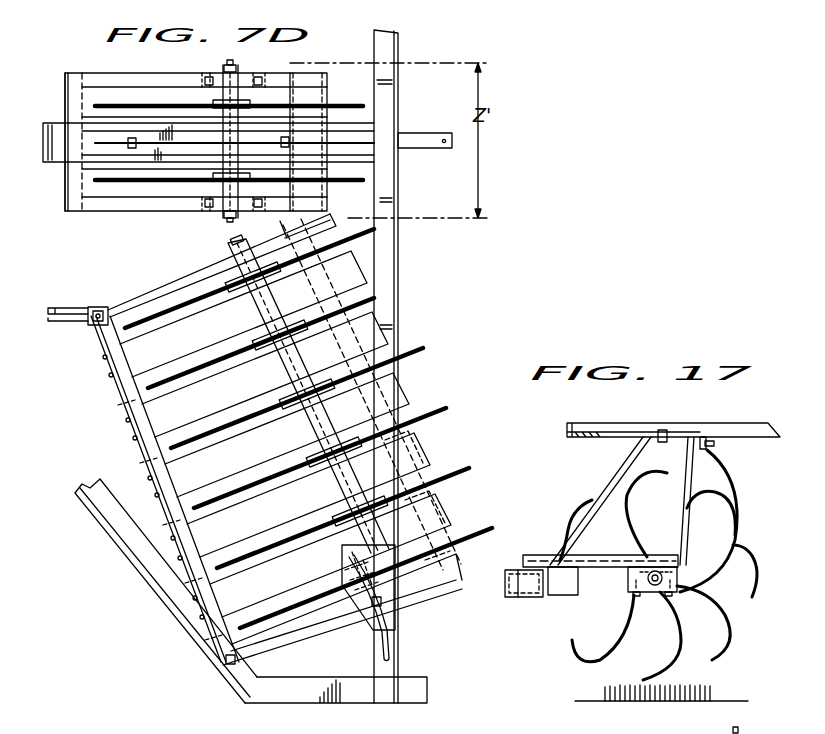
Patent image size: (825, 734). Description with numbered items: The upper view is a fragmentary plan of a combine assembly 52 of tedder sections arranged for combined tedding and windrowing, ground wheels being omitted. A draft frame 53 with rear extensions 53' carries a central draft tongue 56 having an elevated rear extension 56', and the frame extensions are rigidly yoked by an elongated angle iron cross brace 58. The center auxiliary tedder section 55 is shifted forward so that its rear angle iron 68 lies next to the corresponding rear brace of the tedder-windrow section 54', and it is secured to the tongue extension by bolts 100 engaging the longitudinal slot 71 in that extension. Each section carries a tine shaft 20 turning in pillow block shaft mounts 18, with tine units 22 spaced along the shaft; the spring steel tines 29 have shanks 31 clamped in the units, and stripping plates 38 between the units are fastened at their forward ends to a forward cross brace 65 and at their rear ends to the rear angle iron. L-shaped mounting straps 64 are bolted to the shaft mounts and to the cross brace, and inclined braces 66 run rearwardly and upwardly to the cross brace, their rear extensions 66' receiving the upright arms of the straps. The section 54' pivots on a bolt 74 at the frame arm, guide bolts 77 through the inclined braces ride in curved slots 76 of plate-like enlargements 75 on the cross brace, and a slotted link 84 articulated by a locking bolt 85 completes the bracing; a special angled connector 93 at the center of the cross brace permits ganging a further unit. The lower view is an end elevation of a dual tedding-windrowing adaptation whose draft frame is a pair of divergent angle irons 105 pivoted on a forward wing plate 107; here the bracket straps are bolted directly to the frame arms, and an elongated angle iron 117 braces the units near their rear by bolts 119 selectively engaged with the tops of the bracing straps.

In FIG. 7D, the shaft mount 18 is at (200, 81).
In FIG. 17, the shaft mount 18 is at (632, 574).
In FIG. 7D, the tine shaft 20 is at (234, 219).
In FIG. 17, the tine shaft 20 is at (655, 592).
In FIG. 7D, the tine unit 22 is at (262, 96).
In FIG. 7D, the tine 29 is at (113, 103).
In FIG. 17, the tine 29 is at (681, 631).
In FIG. 7D, the shank 31 is at (193, 182).
In FIG. 7D, the stripping plate 38 is at (343, 278).
In FIG. 7D, the combine assembly 52 is at (475, 235).
In FIG. 7D, the draft frame 53 is at (166, 591).
In FIG. 7D, the rear extension 53' is at (336, 705).
In FIG. 7D, the tedder-windrow section 54' is at (145, 497).
In FIG. 17, the tedder-windrow section 54' is at (730, 523).
In FIG. 7D, the auxiliary tedder section 55 is at (62, 203).
In FIG. 7D, the draft tongue 56 is at (216, 191).
In FIG. 7D, the rear extension 56' is at (196, 126).
In FIG. 7D, the cross brace 58 is at (396, 282).
In FIG. 17, the mounting strap iron 64 is at (688, 492).
In FIG. 7D, the cross brace 65 is at (70, 177).
In FIG. 7D, the brace 66 is at (285, 442).
In FIG. 17, the brace 66 is at (600, 501).
In FIG. 17, the rear extension 66' is at (702, 479).
In FIG. 7D, the rear angle iron 68 is at (285, 192).
In FIG. 17, the rear angle iron 68 is at (714, 437).
In FIG. 7D, the slot 71 is at (187, 145).
In FIG. 7D, the bolt 74 is at (225, 664).
In FIG. 7D, the enlargement 75 is at (343, 555).
In FIG. 7D, the slot 76 is at (390, 656).
In FIG. 7D, the guide bolt 77 is at (382, 602).
In FIG. 7D, the slotted link 84 is at (78, 322).
In FIG. 7D, the locking bolt 85 is at (97, 307).
In FIG. 7D, the angled connector 93 is at (429, 146).
In FIG. 7D, the bolt 100 is at (287, 140).
In FIG. 17, the angle iron 105 is at (535, 555).
In FIG. 17, the wing plate 107 is at (578, 598).
In FIG. 17, the angle iron 117 is at (630, 428).
In FIG. 17, the bolt 119 is at (662, 443).